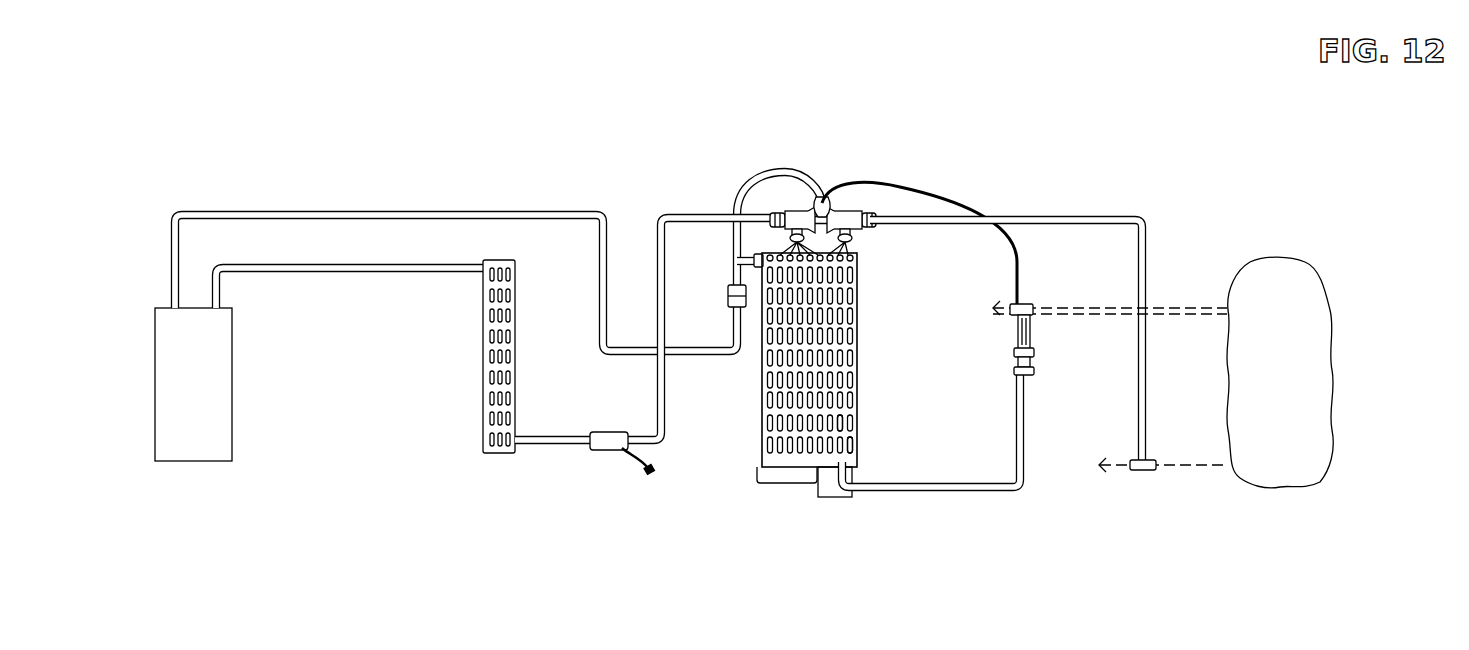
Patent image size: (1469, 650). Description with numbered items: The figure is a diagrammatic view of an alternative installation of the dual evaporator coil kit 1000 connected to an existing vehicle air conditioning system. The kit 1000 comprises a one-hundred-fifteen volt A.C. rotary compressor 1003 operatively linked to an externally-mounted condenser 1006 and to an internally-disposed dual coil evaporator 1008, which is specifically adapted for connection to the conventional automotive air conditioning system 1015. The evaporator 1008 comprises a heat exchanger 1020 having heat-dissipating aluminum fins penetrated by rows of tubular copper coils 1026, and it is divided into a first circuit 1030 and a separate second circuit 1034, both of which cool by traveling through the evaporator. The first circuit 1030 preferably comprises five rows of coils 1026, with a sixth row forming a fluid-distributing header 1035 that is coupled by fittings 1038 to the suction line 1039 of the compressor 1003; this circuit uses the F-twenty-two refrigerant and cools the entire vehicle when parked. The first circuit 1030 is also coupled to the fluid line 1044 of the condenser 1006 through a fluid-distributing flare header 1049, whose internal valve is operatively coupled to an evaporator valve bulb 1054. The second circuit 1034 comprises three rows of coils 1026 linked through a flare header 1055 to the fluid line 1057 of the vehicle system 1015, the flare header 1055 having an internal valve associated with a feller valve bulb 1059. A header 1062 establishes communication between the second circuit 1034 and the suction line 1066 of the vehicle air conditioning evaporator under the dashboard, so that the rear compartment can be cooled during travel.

The kit 1000 is at (1172, 108).
The rotary compressor 1003 is at (149, 304).
The condenser 1006 is at (481, 464).
The evaporator 1008 is at (882, 197).
The vehicle air conditioning system 1015 is at (1290, 491).
The heat exchanger 1020 is at (799, 344).
The tubular copper coils 1026 is at (830, 408).
The first circuit 1030 is at (797, 484).
The second circuit 1034 is at (835, 500).
The fluid-distributing header 1035 is at (760, 432).
The fittings 1038 is at (760, 256).
The suction line 1039 is at (398, 211).
The fluid line 1044 is at (657, 262).
The flare header 1049 is at (797, 203).
The evaporator valve bulb 1054 is at (731, 286).
The flare header 1055 is at (850, 203).
The fluid line 1057 is at (1040, 218).
The feller valve bulb 1059 is at (1034, 363).
The header 1062 is at (847, 435).
The suction line 1066 is at (1027, 430).